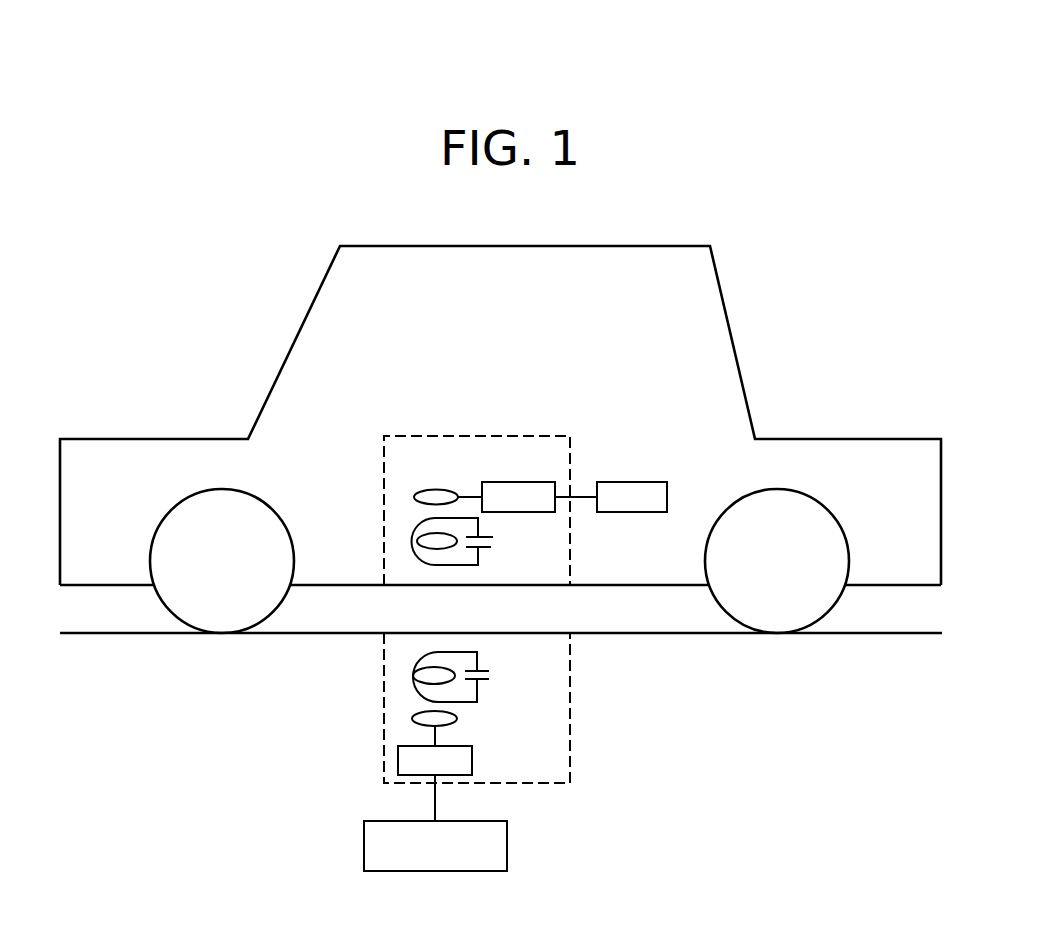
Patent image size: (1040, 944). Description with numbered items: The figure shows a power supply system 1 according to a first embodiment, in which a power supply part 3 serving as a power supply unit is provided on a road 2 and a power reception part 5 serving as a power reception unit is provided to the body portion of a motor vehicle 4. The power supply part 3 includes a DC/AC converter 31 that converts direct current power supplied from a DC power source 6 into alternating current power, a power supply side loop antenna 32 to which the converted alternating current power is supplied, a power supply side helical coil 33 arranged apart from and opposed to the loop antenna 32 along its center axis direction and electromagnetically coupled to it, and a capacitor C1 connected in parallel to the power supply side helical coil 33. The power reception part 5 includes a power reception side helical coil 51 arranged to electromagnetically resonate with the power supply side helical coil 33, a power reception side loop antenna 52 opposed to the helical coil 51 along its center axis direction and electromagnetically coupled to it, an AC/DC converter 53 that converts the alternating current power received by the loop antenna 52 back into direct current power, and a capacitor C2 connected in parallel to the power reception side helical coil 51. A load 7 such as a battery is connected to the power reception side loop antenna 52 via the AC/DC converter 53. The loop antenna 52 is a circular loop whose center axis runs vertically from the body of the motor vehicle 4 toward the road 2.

The power supply system 1 is at (903, 369).
The road 2 is at (922, 633).
The power supply part 3 is at (384, 664).
The motor vehicle 4 is at (845, 439).
The power reception part 5 is at (545, 433).
The DC power source 6 is at (507, 832).
The load 7 is at (651, 482).
The DC/AC converter 31 is at (398, 761).
The power supply side loop antenna 32 is at (458, 718).
The power supply side helical coil 33 is at (413, 684).
The capacitor C1 is at (484, 671).
The power reception side helical coil 51 is at (413, 548).
The power reception side loop antenna 52 is at (424, 491).
The AC/DC converter 53 is at (530, 482).
The capacitor C2 is at (492, 547).